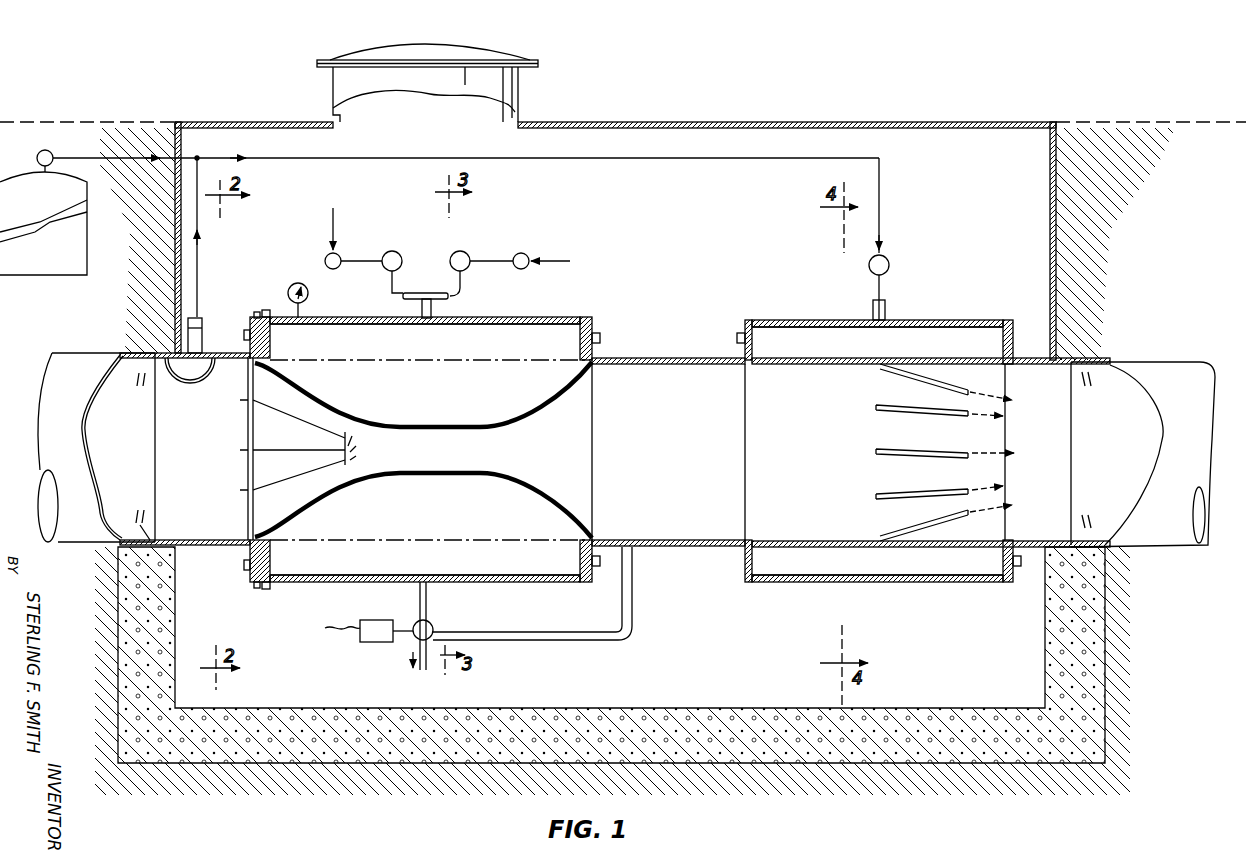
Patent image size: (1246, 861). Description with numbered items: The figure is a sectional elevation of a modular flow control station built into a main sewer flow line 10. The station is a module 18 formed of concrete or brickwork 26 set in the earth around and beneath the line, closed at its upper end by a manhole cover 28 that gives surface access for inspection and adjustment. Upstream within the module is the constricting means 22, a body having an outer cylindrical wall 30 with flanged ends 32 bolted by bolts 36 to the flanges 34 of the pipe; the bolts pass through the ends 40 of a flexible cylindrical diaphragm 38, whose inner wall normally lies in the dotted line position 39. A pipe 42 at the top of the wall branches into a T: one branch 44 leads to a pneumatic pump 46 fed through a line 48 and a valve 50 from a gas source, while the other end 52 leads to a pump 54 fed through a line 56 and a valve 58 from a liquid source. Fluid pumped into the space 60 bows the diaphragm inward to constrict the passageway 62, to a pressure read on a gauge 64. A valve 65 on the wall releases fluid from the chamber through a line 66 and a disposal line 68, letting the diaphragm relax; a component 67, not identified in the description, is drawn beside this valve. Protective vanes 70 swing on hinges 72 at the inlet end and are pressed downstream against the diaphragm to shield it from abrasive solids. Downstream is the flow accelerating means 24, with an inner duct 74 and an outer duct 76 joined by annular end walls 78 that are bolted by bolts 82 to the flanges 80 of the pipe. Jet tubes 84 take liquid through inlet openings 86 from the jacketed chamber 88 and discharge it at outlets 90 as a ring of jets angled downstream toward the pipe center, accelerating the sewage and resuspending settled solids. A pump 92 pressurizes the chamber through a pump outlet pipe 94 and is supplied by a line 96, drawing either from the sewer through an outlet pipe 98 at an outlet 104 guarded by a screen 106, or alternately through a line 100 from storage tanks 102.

The main flow line 10 is at (662, 355).
The module 18 is at (918, 125).
The constricting means 22 is at (598, 250).
The flow accelerating means 24 is at (812, 266).
The concrete or brickwork 26 is at (1100, 640).
The manhole cover 28 is at (490, 56).
The outer cylindrical wall 30 is at (462, 582).
The flanged ends 32 is at (270, 552).
The flanges 34 is at (252, 314).
The bolts 36 is at (244, 334).
The cylindrical diaphragm 38 is at (375, 415).
The dotted line position 39 is at (470, 362).
The ends of diaphragm 40 is at (264, 312).
The pipe 42 is at (434, 322).
The branch 44 is at (465, 294).
The pneumatic pump 46 is at (468, 253).
The line 48 is at (500, 261).
The valve 50 is at (528, 255).
The other end of the T 52 is at (403, 297).
The pump 54 is at (398, 253).
The line 56 is at (380, 258).
The valve 58 is at (325, 255).
The space 60 is at (425, 449).
The passageway 62 is at (423, 489).
The gauge 64 is at (293, 284).
The valve 65 is at (432, 622).
The line 66 is at (418, 612).
The valve actuator 67 is at (374, 620).
The line 68 is at (505, 640).
The protective vanes 70 is at (352, 444).
The hinges 72 is at (247, 436).
The inner duct 74 is at (785, 366).
The outer duct 76 is at (785, 320).
The annular end walls 78 is at (1003, 348).
The flanges 80 is at (1013, 335).
The bolts 82 is at (1021, 345).
The jet tubes 84 is at (890, 485).
The inlet openings 86 is at (880, 362).
The chamber 88 is at (879, 451).
The outlets 90 is at (976, 462).
The pump 92 is at (890, 262).
The pump outlet pipe 94 is at (886, 304).
The line 96 is at (879, 204).
The outlet pipe 98 is at (197, 238).
The line 100 is at (110, 158).
The storage tanks 102 is at (43, 212).
The outlet 104 is at (185, 330).
The screen 106 is at (208, 380).